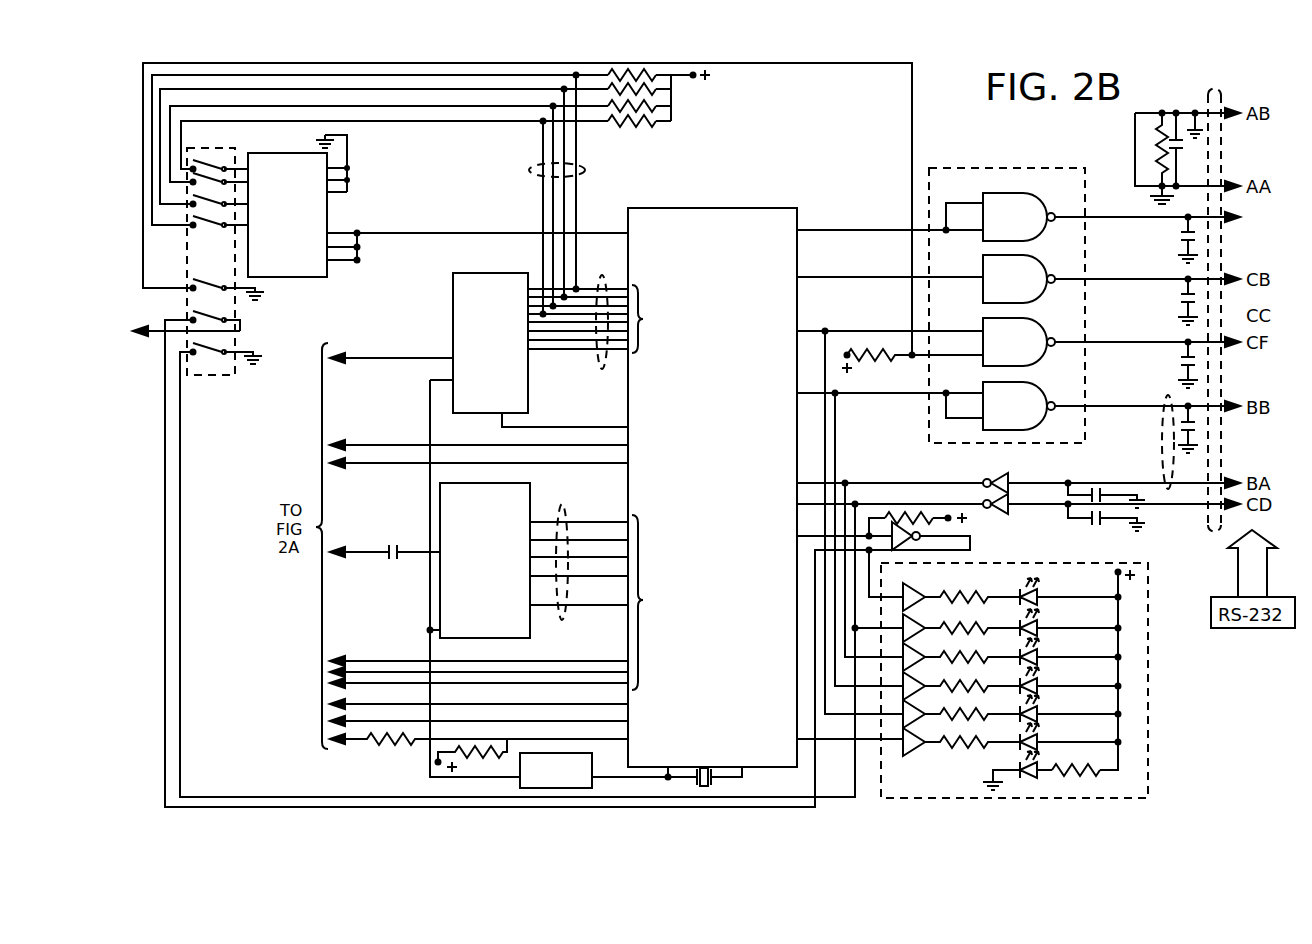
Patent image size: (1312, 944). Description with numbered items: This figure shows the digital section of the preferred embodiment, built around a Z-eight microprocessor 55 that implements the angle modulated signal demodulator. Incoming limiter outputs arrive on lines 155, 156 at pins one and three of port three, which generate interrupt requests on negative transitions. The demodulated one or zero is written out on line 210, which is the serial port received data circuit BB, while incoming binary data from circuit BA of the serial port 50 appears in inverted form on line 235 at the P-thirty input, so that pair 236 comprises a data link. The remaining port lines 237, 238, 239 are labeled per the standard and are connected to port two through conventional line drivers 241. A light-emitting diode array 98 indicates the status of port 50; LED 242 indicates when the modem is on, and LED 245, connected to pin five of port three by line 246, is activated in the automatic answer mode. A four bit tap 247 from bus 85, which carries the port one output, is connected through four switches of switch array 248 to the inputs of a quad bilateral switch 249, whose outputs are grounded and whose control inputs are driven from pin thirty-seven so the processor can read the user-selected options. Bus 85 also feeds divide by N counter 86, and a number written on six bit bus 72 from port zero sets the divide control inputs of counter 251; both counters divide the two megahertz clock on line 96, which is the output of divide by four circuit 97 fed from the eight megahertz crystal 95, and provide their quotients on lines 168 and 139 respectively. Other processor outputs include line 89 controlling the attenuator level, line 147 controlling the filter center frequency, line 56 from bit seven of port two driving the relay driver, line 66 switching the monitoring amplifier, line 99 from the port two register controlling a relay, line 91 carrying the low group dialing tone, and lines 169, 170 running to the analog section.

The RS-232 port 50 is at (1214, 92).
The line drivers 241 is at (1000, 168).
The microprocessor 55 is at (722, 208).
The four bit tap 247 is at (588, 170).
The divide by N counter 86 is at (453, 280).
The quad bilateral switch 249 is at (283, 278).
The output line of counter 86 168 is at (380, 358).
The switch output line to FIG. 2A 170 is at (145, 336).
The switch array 248 is at (208, 375).
The limiter output line 155 is at (388, 445).
The limiter output line 156 is at (377, 463).
The bus 85 is at (602, 370).
The divide by N counter 251 is at (515, 483).
The output line of counter 251 139 is at (363, 557).
The six bit bus 72 is at (568, 623).
The attenuator control line 89 is at (377, 658).
The filter control line 147 is at (335, 662).
The output line 169 is at (331, 685).
The relay driver control line 56 is at (330, 701).
The amplifier switching line 66 is at (330, 725).
The relay control line 99 is at (163, 756).
The low group tone line 91 is at (356, 742).
The two megahertz clock line 96 is at (428, 762).
The divide by four circuit 97 is at (580, 753).
The crystal 95 is at (715, 783).
The auto-answer LED line 246 is at (862, 742).
The LED 242 is at (1020, 765).
The LED 245 is at (1040, 738).
The light-emitting diode array 98 is at (1148, 703).
The line 235 is at (909, 483).
The line 210 is at (860, 393).
The line 239 is at (1165, 217).
The line 238 is at (1162, 279).
The line 237 is at (1160, 342).
The pair 236 is at (1160, 442).